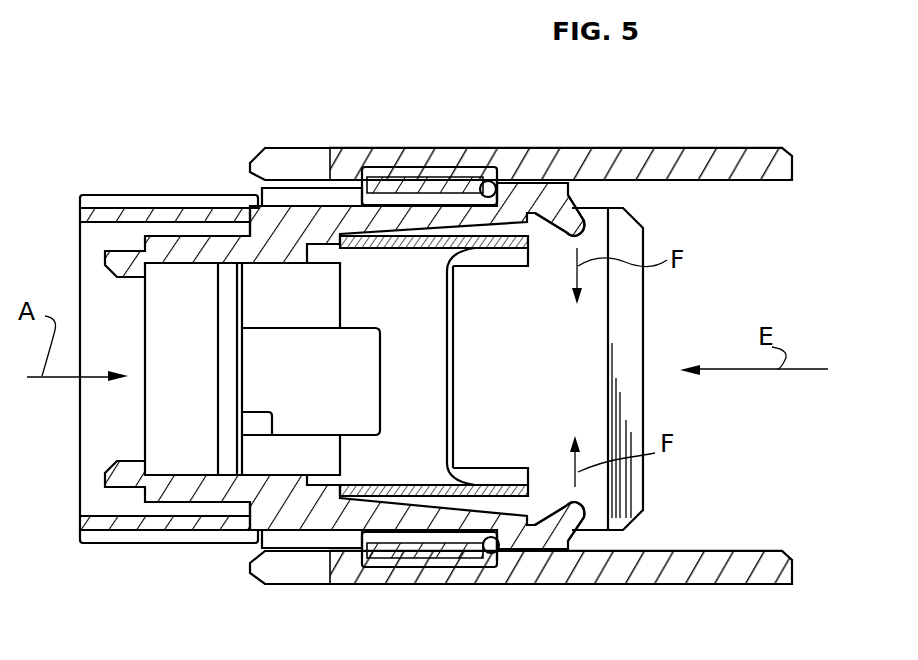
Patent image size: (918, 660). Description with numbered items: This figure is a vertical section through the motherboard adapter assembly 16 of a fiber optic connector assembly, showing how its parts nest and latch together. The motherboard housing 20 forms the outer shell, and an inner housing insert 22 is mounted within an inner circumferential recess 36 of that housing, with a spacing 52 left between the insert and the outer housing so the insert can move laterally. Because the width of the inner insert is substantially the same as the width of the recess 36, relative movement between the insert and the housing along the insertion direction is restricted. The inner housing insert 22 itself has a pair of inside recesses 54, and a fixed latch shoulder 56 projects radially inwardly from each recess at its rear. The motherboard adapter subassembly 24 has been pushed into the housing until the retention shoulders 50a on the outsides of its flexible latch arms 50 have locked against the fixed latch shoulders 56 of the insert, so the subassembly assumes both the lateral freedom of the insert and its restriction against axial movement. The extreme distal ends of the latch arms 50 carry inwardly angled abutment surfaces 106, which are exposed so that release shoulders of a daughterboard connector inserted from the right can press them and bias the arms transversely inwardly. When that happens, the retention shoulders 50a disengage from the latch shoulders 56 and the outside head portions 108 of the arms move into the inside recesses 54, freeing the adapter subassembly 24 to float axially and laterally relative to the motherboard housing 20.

The motherboard adapter assembly 16 is at (798, 165).
The motherboard housing 20 is at (585, 158).
The inner housing insert 22 is at (400, 205).
The motherboard adapter subassembly 24 is at (108, 190).
The inner circumferential recess 36 is at (410, 190).
The flexible latch arms 50 is at (470, 177).
The retention shoulders 50a is at (498, 178).
The spacing 52 is at (372, 150).
The inside recesses 54 is at (457, 197).
The latch shoulder 56 is at (488, 181).
The abutment surfaces 106 is at (567, 527).
The outside head portions 108 is at (527, 195).